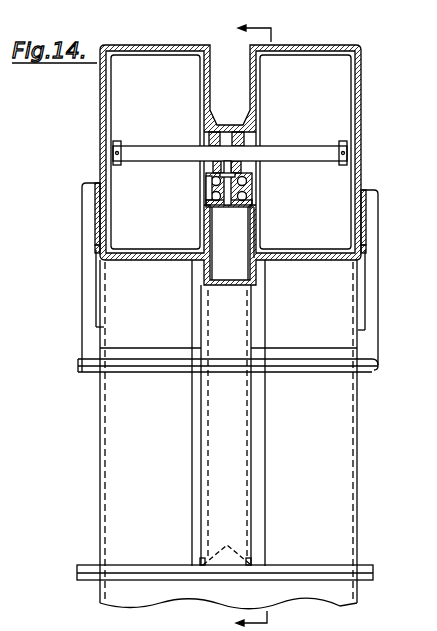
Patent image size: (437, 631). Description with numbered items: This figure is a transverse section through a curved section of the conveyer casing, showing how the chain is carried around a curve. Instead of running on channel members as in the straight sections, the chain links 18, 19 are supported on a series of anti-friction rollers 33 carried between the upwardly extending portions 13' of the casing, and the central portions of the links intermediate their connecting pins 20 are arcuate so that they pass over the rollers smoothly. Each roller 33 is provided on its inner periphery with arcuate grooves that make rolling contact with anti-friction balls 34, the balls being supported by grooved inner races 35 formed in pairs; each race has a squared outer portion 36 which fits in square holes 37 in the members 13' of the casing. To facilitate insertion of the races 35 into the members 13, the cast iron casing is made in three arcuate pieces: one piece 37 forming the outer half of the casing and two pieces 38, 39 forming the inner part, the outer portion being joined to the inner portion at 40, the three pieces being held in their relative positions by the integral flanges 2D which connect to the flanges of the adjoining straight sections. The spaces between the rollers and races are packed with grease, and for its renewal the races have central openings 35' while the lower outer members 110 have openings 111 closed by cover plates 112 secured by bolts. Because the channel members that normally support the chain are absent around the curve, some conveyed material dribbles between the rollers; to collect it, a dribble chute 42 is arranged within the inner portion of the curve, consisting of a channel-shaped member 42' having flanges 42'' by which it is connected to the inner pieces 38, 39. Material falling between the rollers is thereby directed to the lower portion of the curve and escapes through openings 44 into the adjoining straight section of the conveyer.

The members of the casing 13 is at (231, 328).
The upwardly extending portions of the casing 13' is at (277, 232).
The chain link 18 is at (252, 181).
The chain link 19 is at (212, 131).
The connecting pin 20 is at (283, 150).
The anti-friction roller 33 is at (230, 227).
The anti-friction ball 34 is at (209, 182).
The grooved inner race 35 is at (202, 189).
The central opening 35' is at (276, 197).
The squared outer portion 36 is at (252, 190).
The outer casing piece 37 is at (103, 120).
The inner casing piece 38 is at (128, 262).
The inner casing piece 39 is at (300, 262).
The joint 40 is at (100, 172).
The dribble chute 42 is at (202, 413).
The channel-shaped member 42' is at (298, 318).
The flange 42'' is at (150, 310).
The opening 44 is at (203, 560).
The lower outer member 110 is at (97, 243).
The opening 111 is at (97, 206).
The cover plate 112 is at (366, 228).
The integral flange 2D is at (375, 366).